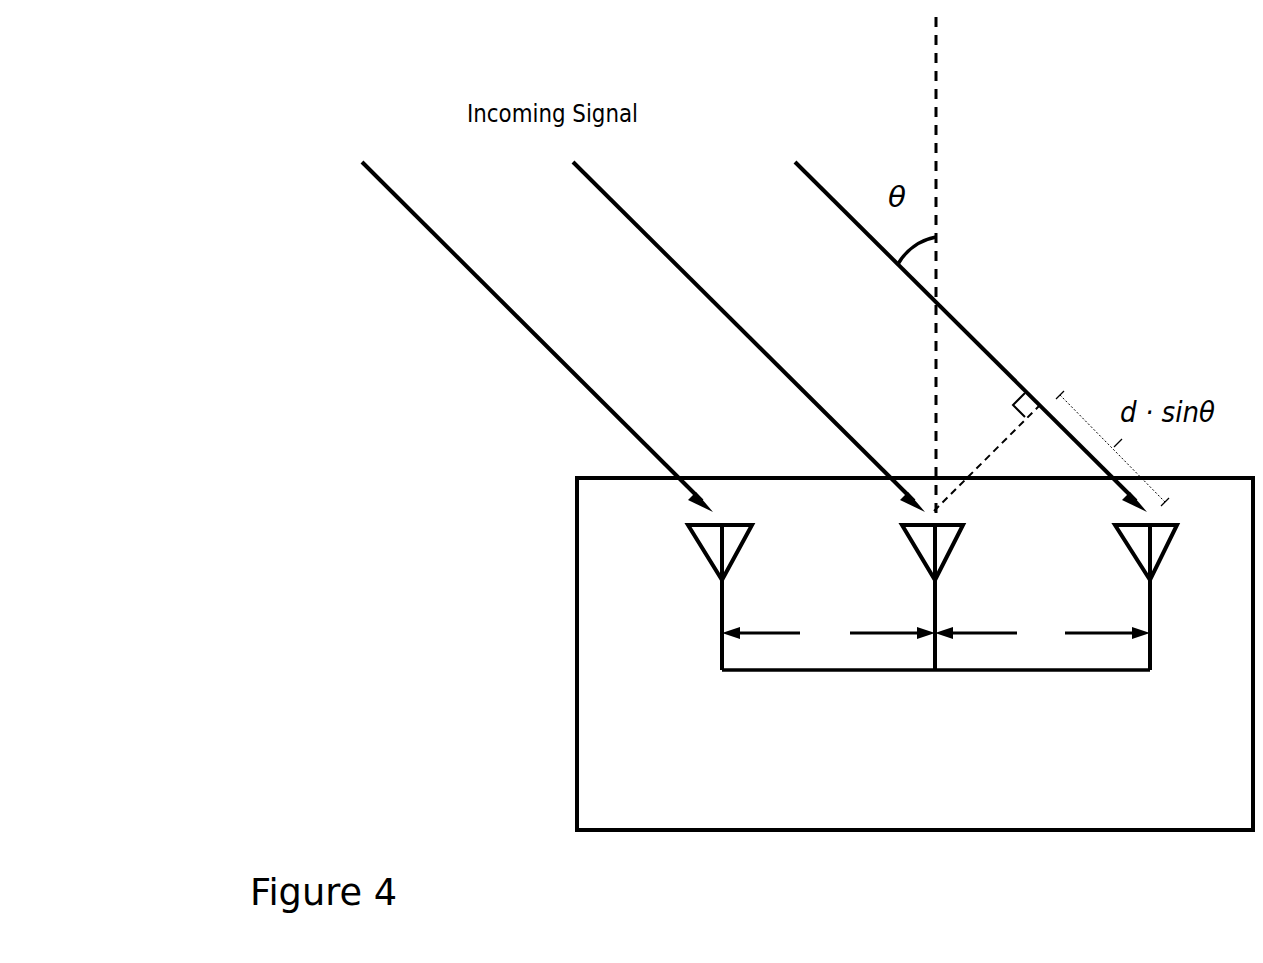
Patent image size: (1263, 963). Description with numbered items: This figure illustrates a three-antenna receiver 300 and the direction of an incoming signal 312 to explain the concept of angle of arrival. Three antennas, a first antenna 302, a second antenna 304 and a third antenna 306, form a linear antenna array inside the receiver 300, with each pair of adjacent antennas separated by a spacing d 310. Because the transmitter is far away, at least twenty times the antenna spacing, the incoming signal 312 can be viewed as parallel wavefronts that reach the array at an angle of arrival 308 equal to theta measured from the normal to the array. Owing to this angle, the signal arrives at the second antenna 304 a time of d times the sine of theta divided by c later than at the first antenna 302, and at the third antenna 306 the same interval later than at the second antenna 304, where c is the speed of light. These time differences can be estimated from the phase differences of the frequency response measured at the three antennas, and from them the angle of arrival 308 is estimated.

The three-antenna receiver 300 is at (568, 740).
The antenna 1 302 is at (705, 607).
The antenna 2 304 is at (920, 607).
The antenna 3 306 is at (1158, 630).
The angle of arrival 308 is at (880, 190).
The spacing d 310 is at (1042, 600).
The incoming signal 312 is at (493, 308).